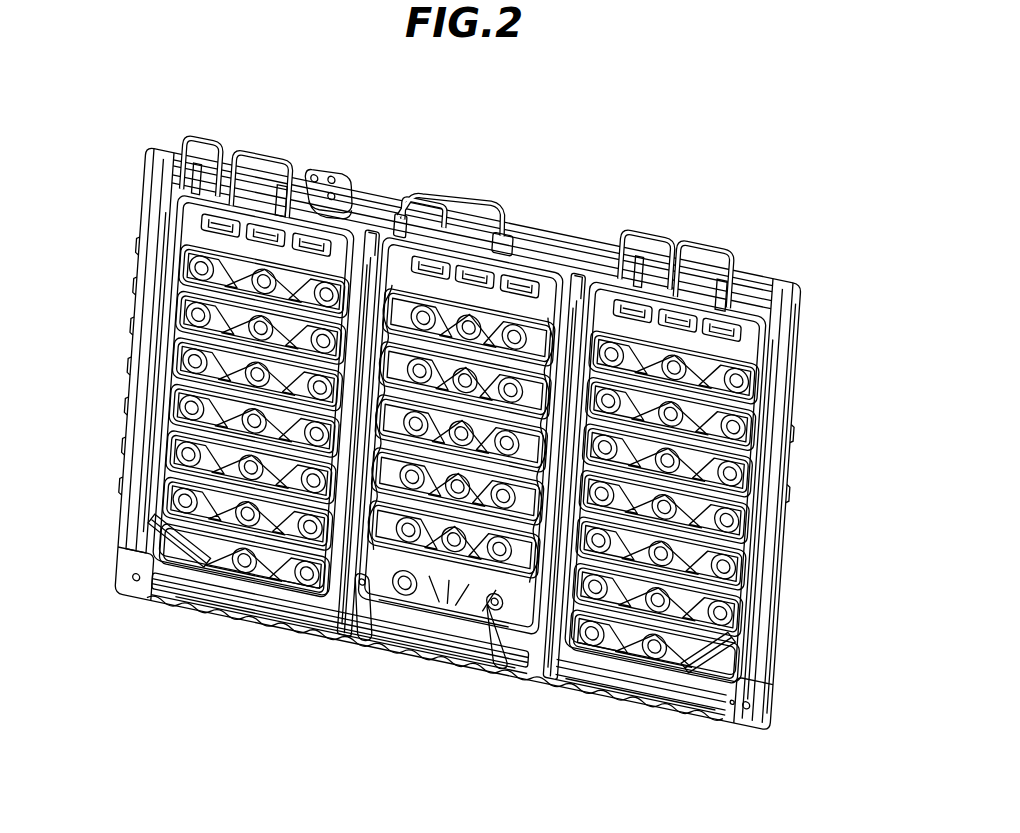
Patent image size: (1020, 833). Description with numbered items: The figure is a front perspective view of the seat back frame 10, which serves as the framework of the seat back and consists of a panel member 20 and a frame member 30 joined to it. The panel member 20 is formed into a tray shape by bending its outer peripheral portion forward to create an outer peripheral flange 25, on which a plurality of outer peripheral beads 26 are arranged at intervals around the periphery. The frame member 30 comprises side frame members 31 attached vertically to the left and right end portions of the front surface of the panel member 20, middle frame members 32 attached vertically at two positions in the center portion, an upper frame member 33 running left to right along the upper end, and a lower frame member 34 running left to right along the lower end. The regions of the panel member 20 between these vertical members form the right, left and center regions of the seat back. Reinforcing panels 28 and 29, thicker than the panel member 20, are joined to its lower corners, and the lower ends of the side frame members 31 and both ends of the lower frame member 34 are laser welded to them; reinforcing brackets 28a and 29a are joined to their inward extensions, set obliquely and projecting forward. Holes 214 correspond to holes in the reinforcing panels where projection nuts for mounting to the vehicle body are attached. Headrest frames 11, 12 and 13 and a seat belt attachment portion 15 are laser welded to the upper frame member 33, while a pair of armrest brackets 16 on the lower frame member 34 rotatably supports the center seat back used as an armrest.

The seat back frame 10 is at (569, 150).
The headrest frame 11 is at (199, 141).
The headrest frame 12 is at (702, 248).
The headrest frame 13 is at (430, 189).
The seat belt attachment portion 15 is at (335, 180).
The armrest bracket 16 is at (340, 620).
The panel member 20 is at (538, 692).
The outer peripheral flange 25 is at (804, 368).
The outer peripheral bead 26 is at (575, 690).
The reinforcing panel 28 is at (135, 574).
The reinforcing bracket 28a is at (179, 540).
The reinforcing panel 29 is at (733, 709).
The reinforcing bracket 29a is at (708, 652).
The frame member 30 is at (466, 434).
The side frame member 31 is at (158, 248).
The middle frame member 32 is at (363, 237).
The upper frame member 33 is at (528, 245).
The lower frame member 34 is at (432, 640).
The hole 214 is at (134, 583).